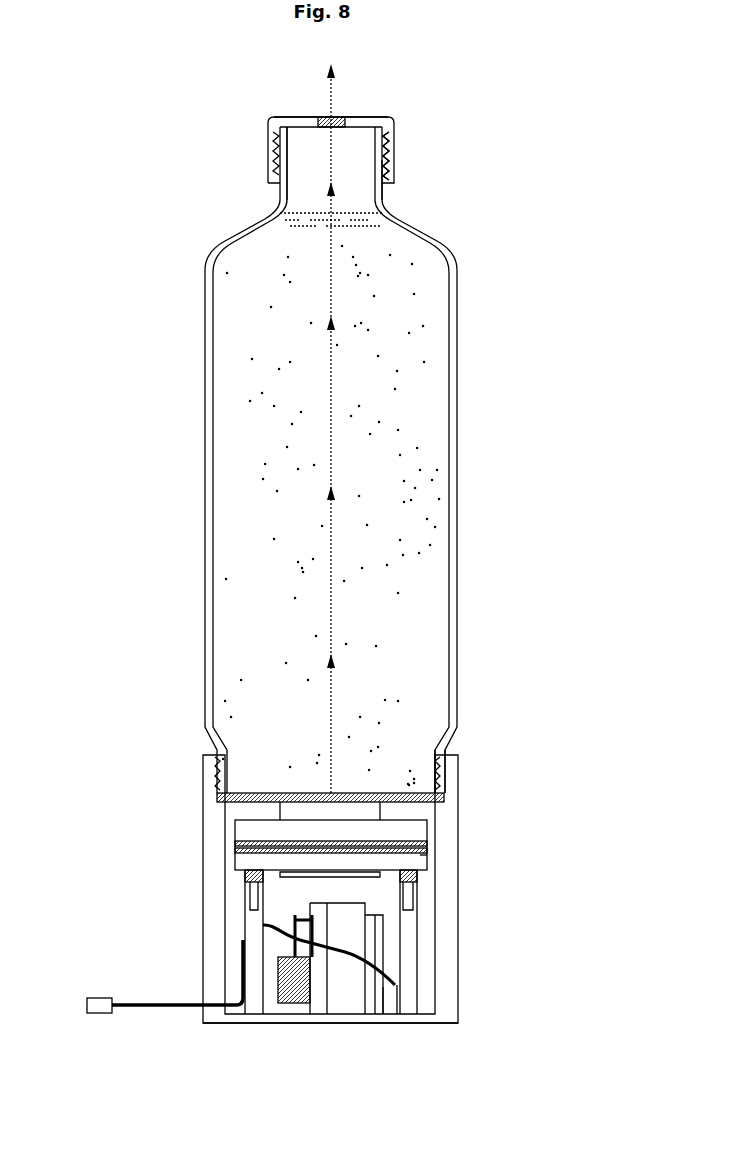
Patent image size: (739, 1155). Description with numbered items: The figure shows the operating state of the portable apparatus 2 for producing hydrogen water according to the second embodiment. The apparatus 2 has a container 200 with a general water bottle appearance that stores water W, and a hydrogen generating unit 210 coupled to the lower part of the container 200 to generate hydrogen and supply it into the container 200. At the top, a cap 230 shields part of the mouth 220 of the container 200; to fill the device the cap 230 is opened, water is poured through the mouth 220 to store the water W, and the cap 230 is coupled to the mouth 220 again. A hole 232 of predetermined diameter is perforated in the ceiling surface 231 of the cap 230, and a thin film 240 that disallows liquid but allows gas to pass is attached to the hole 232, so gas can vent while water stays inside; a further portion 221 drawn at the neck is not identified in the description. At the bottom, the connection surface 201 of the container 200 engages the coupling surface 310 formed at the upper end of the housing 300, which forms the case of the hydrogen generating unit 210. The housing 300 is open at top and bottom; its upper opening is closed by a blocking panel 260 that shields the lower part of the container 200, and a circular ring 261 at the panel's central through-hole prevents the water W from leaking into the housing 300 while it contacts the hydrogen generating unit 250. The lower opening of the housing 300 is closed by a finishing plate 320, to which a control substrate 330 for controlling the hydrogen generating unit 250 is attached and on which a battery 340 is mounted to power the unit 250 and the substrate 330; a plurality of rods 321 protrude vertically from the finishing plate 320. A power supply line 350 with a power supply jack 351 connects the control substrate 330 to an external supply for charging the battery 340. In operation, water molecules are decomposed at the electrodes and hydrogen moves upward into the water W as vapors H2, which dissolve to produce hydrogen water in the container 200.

The portable apparatus for producing hydrogen water 2 is at (486, 405).
The container 200 is at (457, 292).
The connection surface 201 is at (453, 733).
The hydrogen generating unit 210 is at (459, 925).
The mouth 220 is at (309, 157).
The neck outer wall 221 is at (382, 190).
The cap 230 is at (269, 162).
The ceiling surface 231 is at (297, 116).
The hole 232 is at (392, 155).
The thin film 240 is at (334, 118).
The hydrogen generating unit 250 is at (427, 855).
The blocking panel 260 is at (216, 795).
The circular ring 261 is at (240, 822).
The housing 300 is at (458, 822).
The coupling surface 310 is at (447, 768).
The finishing plate 320 is at (383, 1017).
The rods 321 is at (255, 918).
The control substrate 330 is at (297, 1003).
The battery 340 is at (347, 992).
The power supply line 350 is at (135, 1012).
The power supply jack 351 is at (90, 1013).
The water W is at (425, 463).
The hydrogen vapors H2 is at (420, 535).